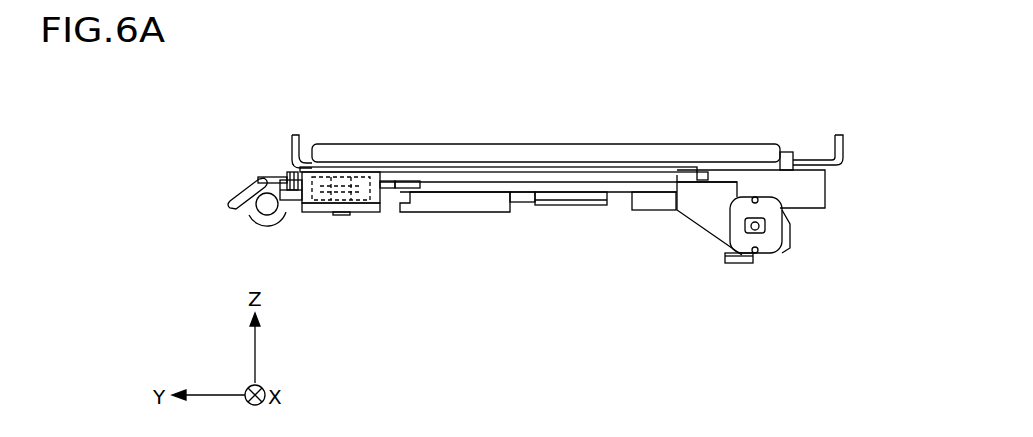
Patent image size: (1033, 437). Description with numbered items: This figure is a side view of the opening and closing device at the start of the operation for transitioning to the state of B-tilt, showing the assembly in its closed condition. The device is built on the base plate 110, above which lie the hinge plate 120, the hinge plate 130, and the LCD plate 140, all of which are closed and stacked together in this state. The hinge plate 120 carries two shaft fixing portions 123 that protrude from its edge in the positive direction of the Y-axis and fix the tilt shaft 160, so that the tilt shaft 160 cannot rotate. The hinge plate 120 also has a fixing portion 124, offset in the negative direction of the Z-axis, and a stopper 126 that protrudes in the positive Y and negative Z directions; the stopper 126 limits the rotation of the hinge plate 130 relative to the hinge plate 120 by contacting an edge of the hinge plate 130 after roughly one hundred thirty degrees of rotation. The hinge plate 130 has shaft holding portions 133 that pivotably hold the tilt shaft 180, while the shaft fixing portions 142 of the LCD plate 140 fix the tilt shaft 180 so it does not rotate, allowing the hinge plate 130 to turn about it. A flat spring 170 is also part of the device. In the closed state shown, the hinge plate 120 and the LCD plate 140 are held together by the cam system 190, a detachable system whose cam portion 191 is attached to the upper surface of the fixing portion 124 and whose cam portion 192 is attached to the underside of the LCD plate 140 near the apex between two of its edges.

The base plate 110 is at (742, 263).
The hinge plate 120 is at (712, 207).
The shaft fixing portions 123 is at (258, 216).
The fixing portion 124 is at (339, 262).
The stopper 126 is at (246, 193).
The hinge plate 130 is at (497, 178).
The shaft holding portions 133 is at (653, 200).
The LCD plate 140 is at (583, 150).
The shaft fixing portions 142 is at (404, 211).
The tilt shaft 160 is at (268, 216).
The flat spring 170 is at (572, 201).
The tilt shaft 180 is at (525, 198).
The cam system 190 is at (350, 246).
The cam portion 191 is at (372, 202).
The cam portion 192 is at (357, 200).